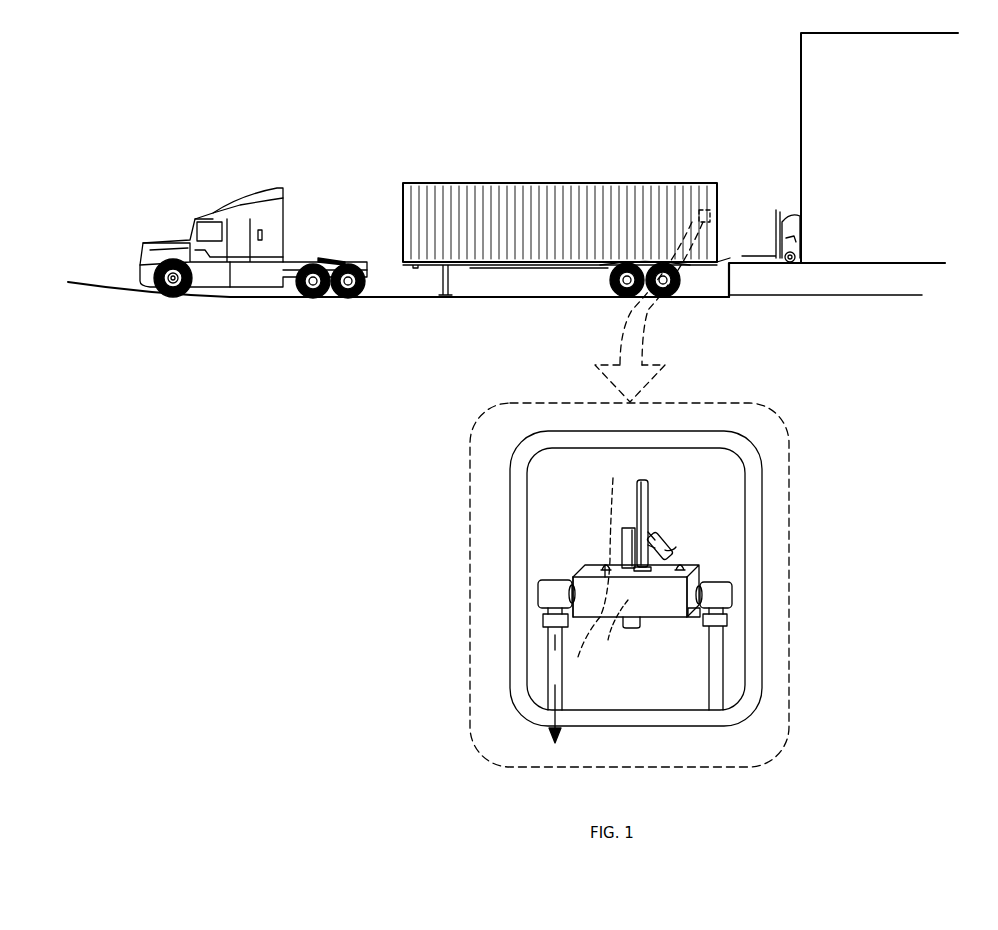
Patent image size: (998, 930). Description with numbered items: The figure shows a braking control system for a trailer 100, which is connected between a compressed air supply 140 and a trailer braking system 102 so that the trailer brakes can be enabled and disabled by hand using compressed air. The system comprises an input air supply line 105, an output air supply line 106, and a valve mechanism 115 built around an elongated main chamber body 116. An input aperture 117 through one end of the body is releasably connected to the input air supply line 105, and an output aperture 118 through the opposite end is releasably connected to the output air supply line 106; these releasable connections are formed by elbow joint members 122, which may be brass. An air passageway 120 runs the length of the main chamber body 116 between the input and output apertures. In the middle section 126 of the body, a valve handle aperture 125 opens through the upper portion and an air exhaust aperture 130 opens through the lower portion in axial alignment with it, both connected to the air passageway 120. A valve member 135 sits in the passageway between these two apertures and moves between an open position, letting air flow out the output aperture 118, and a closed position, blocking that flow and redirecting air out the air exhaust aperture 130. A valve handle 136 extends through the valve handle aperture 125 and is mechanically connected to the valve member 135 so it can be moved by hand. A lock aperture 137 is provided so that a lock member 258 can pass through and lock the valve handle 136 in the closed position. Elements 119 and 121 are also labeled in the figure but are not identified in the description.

The braking control system for a trailer 100 is at (893, 358).
The trailer braking system 102 is at (903, 393).
The input air supply line 105 is at (557, 653).
The output air supply line 106 is at (715, 678).
The valve mechanism 115 is at (760, 442).
The elongated main chamber body 116 is at (655, 596).
The input aperture 117 is at (572, 579).
The output aperture 118 is at (698, 578).
The inlet port 119 is at (605, 568).
The air passageway 120 is at (572, 656).
The sensor axis 121 is at (607, 559).
The elbow joint members 122 is at (550, 595).
The valve handle aperture 125 is at (648, 535).
The middle section 126 is at (610, 630).
The air exhaust aperture 130 is at (631, 628).
The valve member 135 is at (688, 625).
The valve handle 136 is at (648, 487).
The lock aperture 137 is at (657, 545).
The compressed air supply 140 is at (554, 725).
The lock member 258 is at (668, 548).